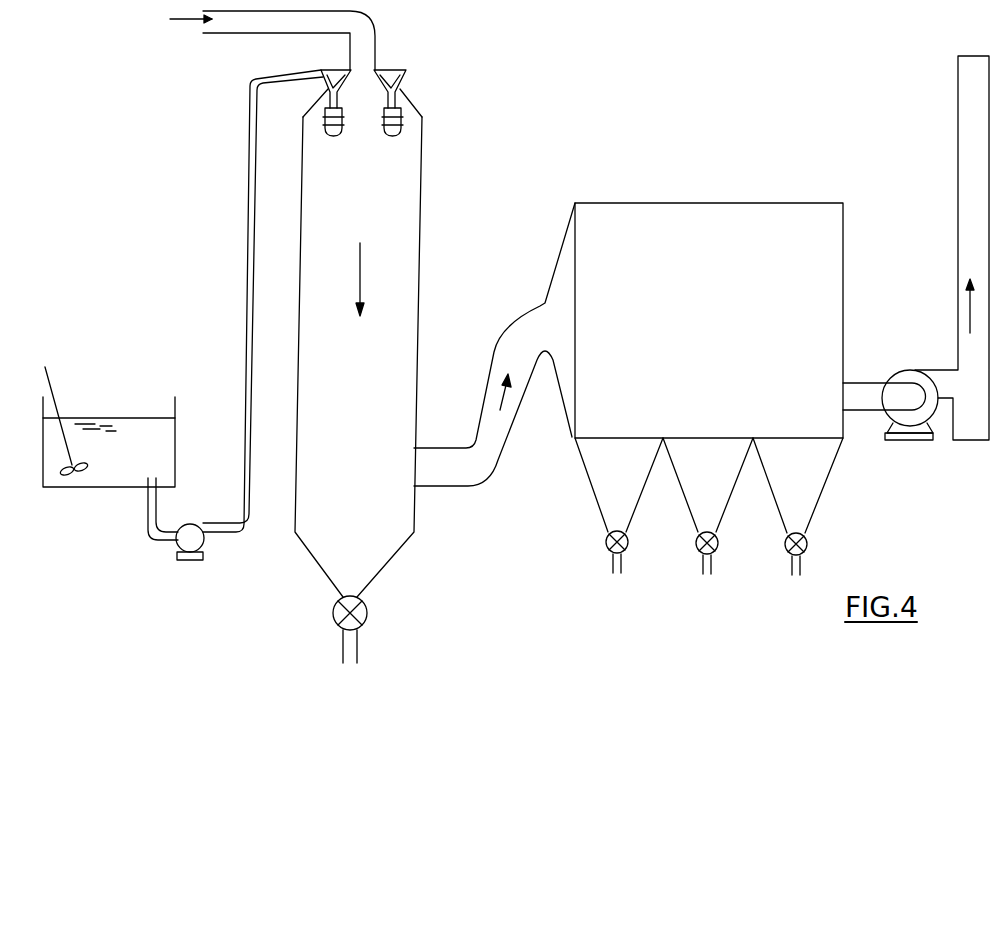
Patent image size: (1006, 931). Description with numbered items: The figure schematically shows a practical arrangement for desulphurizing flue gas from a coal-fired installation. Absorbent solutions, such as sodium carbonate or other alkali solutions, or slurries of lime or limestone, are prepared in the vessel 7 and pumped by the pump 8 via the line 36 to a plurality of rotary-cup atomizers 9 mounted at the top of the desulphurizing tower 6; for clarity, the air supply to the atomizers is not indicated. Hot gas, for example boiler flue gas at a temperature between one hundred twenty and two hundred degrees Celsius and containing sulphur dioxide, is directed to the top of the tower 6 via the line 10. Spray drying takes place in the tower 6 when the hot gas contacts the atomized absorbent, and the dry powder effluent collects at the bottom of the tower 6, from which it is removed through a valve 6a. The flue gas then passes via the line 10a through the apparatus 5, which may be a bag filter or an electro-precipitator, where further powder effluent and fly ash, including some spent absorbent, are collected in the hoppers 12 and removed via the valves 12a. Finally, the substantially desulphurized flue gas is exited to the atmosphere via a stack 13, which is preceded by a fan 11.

The apparatus for treating the flue gas 5 is at (706, 320).
The desulphurizing tower 6 is at (422, 267).
The valve 6a is at (363, 609).
The vessel 7 is at (176, 398).
The pump 8 is at (204, 546).
The rotary-cup atomizers 9 is at (325, 122).
The line 10 is at (268, 27).
The line 10a is at (440, 487).
The fan 11 is at (907, 370).
The hoppers 12 is at (630, 512).
The valves 12a is at (606, 548).
The stack 13 is at (958, 215).
The line 36 is at (246, 265).